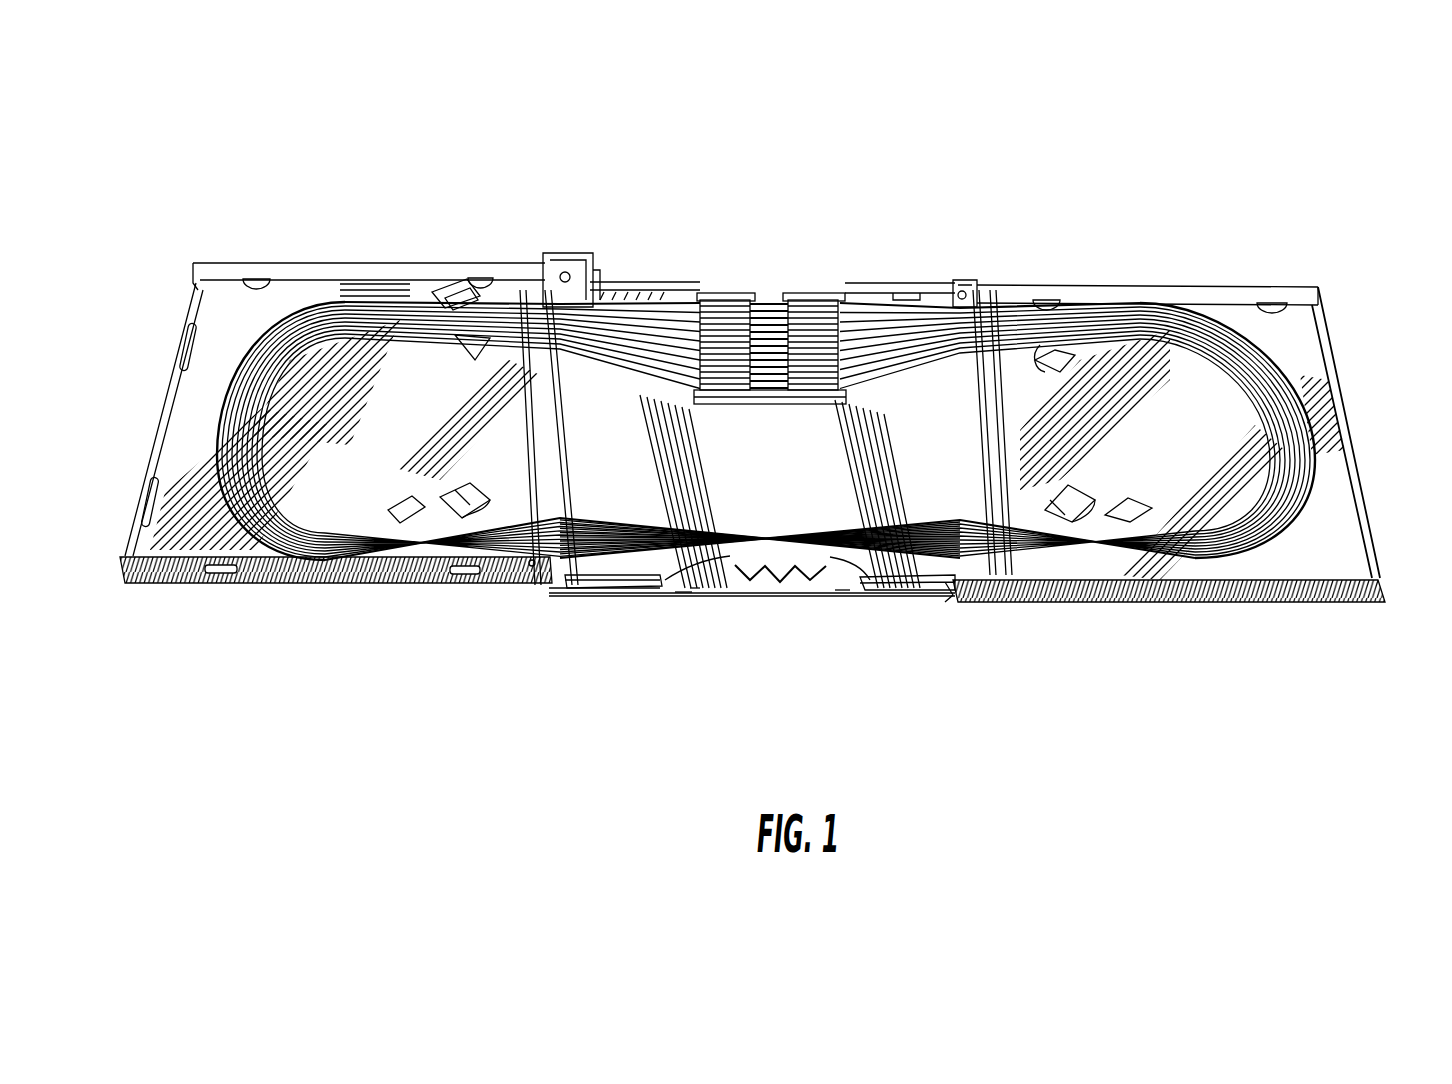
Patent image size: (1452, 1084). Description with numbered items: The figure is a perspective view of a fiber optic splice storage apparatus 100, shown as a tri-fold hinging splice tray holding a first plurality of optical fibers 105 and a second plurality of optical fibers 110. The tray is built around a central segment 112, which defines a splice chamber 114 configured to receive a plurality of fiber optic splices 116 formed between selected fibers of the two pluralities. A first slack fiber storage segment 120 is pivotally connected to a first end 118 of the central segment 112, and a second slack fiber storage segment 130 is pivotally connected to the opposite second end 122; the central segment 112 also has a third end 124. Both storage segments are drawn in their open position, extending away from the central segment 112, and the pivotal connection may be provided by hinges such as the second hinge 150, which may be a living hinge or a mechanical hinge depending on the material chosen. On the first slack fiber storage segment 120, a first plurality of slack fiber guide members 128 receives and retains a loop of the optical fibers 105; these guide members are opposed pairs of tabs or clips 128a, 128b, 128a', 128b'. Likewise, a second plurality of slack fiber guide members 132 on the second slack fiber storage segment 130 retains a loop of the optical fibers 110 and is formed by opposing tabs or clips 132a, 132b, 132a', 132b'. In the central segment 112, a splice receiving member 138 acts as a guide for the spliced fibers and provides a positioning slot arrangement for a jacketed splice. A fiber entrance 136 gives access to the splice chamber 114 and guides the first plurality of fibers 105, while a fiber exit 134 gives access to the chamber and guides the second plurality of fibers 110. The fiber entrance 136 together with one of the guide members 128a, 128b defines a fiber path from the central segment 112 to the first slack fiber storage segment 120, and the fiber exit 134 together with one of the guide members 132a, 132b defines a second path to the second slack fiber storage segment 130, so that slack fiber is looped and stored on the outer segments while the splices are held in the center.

The fiber optic splice storage apparatus 100 is at (1180, 682).
The first plurality of optical fibers 105 is at (1316, 346).
The second plurality of optical fibers 110 is at (133, 376).
The central segment 112 is at (845, 607).
The splice chamber 114 is at (760, 471).
The fiber optic splices 116 is at (707, 370).
The first end 118 is at (968, 578).
The first slack fiber storage segment 120 is at (1262, 600).
The second end 122 is at (533, 562).
The third end 124 is at (693, 590).
The first plurality of slack fiber guide members 128 is at (1033, 489).
The slack fiber guide member 128a is at (1160, 265).
The slack fiber guide member 128a' is at (1081, 591).
The slack fiber guide member 128b is at (1139, 377).
The slack fiber guide member 128b' is at (1156, 485).
The second slack fiber storage segment 130 is at (340, 570).
The second plurality of slack fiber guide members 132 is at (414, 456).
The slack fiber guide member 132a is at (415, 342).
The slack fiber guide member 132a' is at (381, 482).
The slack fiber guide member 132b is at (471, 233).
The slack fiber guide member 132b' is at (414, 609).
The fiber exit 134 is at (842, 597).
The fiber entrance 136 is at (683, 604).
The splice receiving member 138 is at (803, 283).
The second hinge 150 is at (968, 282).